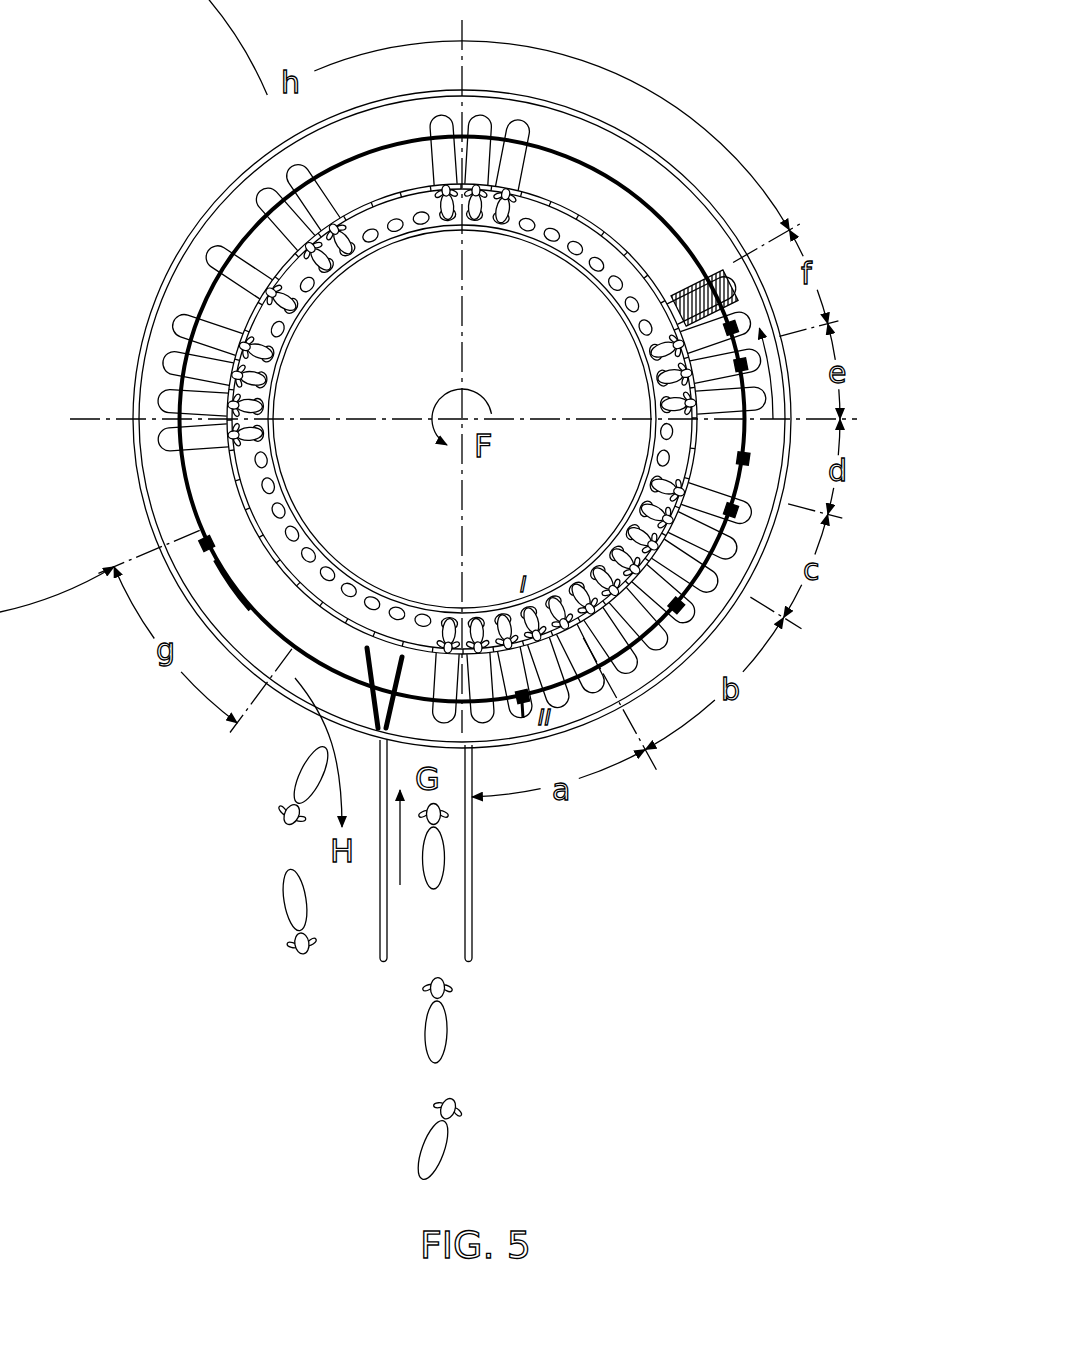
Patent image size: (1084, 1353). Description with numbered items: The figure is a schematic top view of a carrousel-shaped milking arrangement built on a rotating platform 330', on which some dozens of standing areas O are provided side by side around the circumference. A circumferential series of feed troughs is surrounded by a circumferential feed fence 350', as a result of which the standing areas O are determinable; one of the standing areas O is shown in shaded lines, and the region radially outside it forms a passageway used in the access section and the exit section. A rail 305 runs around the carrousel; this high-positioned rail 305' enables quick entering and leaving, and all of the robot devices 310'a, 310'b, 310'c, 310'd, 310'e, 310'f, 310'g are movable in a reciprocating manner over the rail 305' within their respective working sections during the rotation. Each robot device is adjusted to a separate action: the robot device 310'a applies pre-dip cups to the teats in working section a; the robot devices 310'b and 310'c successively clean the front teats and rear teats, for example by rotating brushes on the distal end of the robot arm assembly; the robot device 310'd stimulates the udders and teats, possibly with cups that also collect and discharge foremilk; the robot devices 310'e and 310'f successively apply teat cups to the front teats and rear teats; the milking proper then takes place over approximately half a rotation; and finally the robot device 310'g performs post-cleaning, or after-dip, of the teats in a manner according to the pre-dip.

The rail 305 is at (483, 384).
The rail 305' is at (298, 562).
The robot device 310'a is at (557, 774).
The robot device 310'b is at (680, 728).
The robot device 310'c is at (743, 654).
The robot device 310'd is at (812, 567).
The robot device 310'e is at (820, 284).
The robot device 310'f is at (802, 241).
The robot device 310'g is at (291, 508).
The rotating platform 330' is at (462, 419).
The circumferential feed fence 350' is at (462, 419).
The standing area o is at (627, 318).